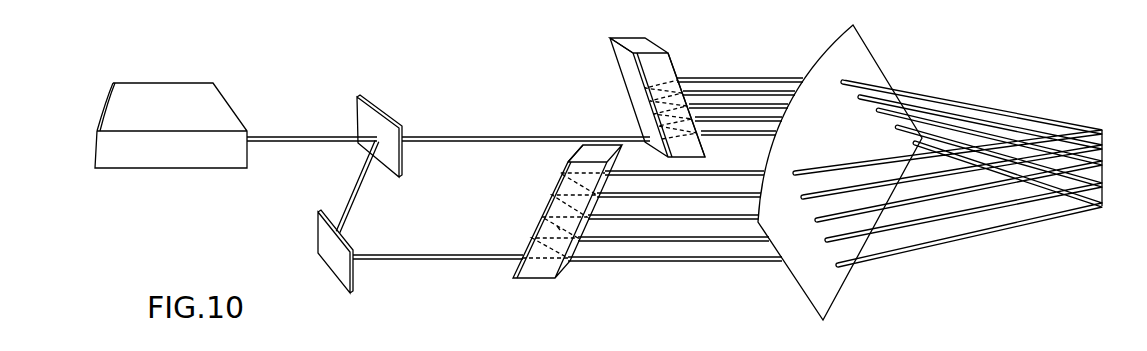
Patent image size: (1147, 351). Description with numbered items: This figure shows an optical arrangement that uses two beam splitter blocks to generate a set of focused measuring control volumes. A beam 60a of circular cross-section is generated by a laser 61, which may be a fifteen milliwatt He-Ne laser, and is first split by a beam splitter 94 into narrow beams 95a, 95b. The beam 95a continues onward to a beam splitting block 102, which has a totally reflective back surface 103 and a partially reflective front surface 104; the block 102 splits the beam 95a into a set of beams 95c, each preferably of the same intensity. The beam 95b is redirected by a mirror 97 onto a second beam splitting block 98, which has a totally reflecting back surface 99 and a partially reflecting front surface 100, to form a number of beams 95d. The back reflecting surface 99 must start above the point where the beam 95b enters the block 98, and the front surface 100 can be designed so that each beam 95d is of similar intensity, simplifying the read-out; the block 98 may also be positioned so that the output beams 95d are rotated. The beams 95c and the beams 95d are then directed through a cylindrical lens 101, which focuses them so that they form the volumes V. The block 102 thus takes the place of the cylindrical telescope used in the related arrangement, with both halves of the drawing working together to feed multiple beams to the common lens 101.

The laser 61 is at (146, 118).
The beam 60a is at (303, 136).
The beam splitter 94 is at (397, 124).
The beam 95a is at (498, 135).
The beam 95b is at (362, 187).
The beams 95c is at (770, 75).
The beams 95d is at (683, 262).
The mirror 97 is at (351, 293).
The beam splitting block 98 is at (531, 232).
The totally reflecting back surface 99 is at (563, 168).
The partially reflecting front surface 100 is at (557, 228).
The cylindrical lens 101 is at (878, 52).
The beam splitting block 102 is at (638, 81).
The totally reflective back surface 103 is at (628, 68).
The partially reflective front surface 104 is at (681, 63).
The volumes V is at (1102, 130).